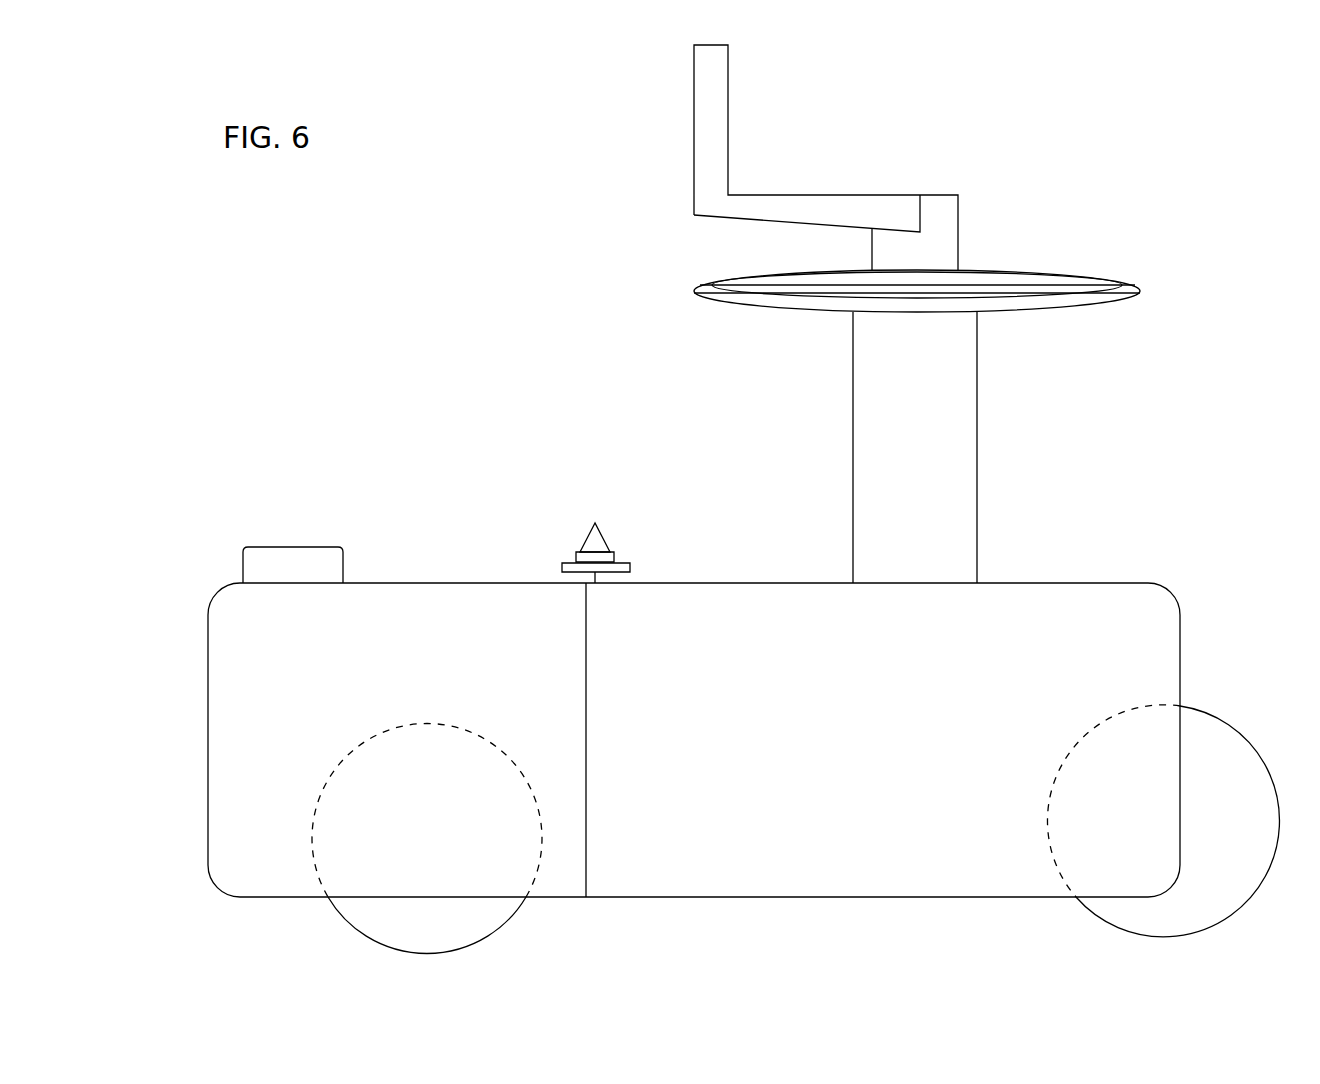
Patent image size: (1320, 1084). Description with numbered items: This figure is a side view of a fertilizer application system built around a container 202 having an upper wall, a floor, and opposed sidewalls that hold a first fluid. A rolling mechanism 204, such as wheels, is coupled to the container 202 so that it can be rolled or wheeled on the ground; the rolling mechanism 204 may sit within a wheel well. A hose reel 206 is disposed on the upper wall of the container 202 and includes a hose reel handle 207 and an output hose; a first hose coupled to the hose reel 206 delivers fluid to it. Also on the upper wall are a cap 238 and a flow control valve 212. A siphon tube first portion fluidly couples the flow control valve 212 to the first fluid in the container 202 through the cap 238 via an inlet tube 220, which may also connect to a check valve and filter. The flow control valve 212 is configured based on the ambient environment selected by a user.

The container 202 is at (208, 674).
The rolling mechanism 204 is at (445, 931).
The hose reel 206 is at (950, 424).
The hose reel handle 207 is at (706, 128).
The flow control valve 212 is at (607, 548).
The inlet tube 220 is at (590, 712).
The cap 238 is at (330, 565).